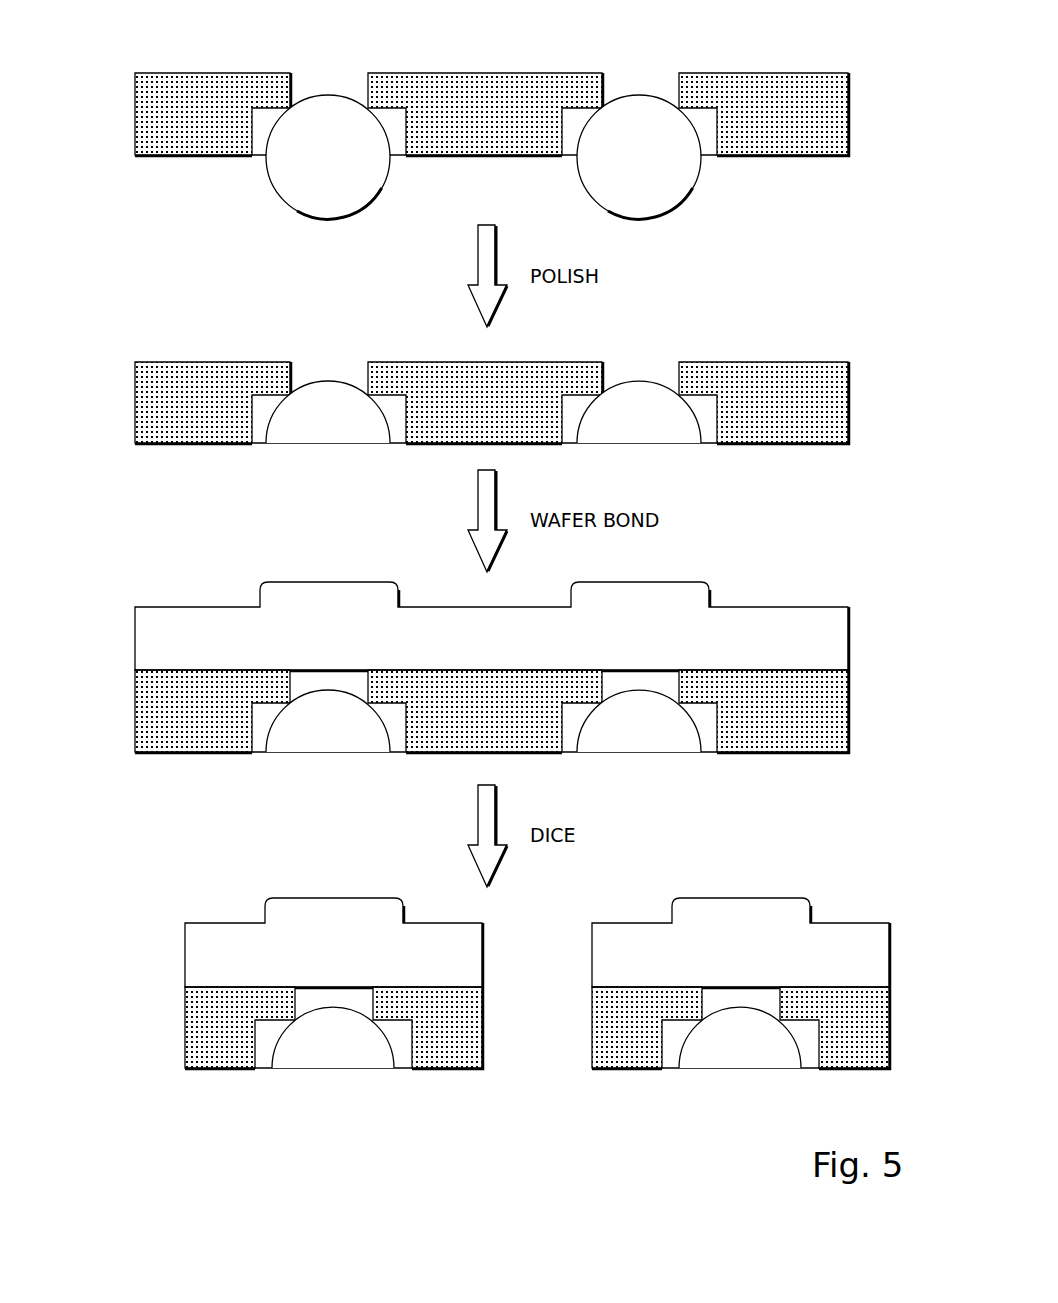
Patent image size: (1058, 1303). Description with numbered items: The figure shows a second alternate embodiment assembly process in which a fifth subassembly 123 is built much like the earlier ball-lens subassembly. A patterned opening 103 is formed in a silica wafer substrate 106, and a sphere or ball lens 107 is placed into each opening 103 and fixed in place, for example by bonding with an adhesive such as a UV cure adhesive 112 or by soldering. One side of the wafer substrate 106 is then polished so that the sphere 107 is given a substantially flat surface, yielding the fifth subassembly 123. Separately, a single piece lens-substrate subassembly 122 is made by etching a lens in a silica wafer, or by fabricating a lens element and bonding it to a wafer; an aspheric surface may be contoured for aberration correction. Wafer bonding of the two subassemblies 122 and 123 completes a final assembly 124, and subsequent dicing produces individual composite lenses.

The patterned opening 103 is at (642, 88).
The silica wafer substrate 106 is at (848, 113).
The sphere or ball lens 107 is at (567, 168).
The UV cure adhesive 112 is at (258, 165).
The single piece lens-substrate subassembly 122 is at (848, 645).
The fifth subassembly 123 is at (97, 362).
The final assembly 124 is at (491, 633).